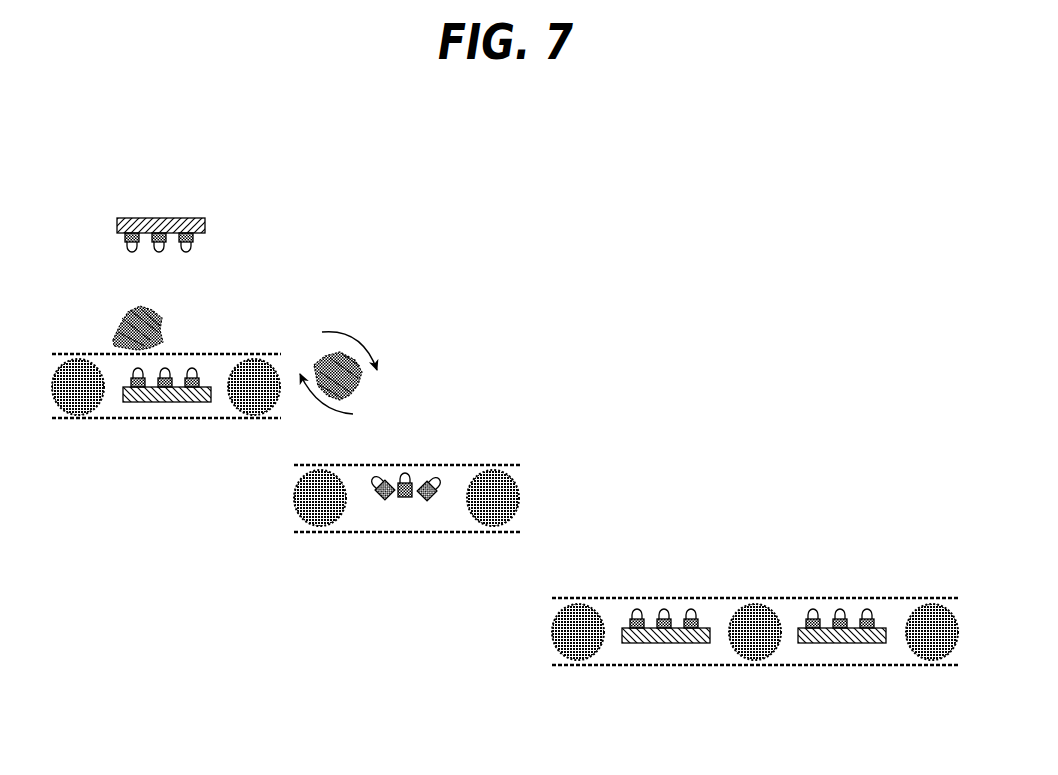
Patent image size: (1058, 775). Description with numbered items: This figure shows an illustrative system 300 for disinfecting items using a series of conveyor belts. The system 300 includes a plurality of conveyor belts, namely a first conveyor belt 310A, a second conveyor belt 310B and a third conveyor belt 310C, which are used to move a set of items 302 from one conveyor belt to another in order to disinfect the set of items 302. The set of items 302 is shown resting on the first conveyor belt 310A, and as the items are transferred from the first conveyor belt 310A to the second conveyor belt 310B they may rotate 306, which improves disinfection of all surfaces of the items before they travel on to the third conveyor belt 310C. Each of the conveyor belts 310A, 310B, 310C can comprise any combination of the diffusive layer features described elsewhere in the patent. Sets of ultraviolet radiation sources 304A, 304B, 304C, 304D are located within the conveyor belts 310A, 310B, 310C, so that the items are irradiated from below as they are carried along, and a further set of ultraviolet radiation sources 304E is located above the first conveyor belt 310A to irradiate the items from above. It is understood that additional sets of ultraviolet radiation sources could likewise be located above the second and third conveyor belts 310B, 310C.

The system 300 is at (185, 152).
The set of items 302 is at (125, 327).
The set of ultraviolet radiation sources 304A is at (130, 402).
The set of ultraviolet radiation sources 304B is at (378, 503).
The set of ultraviolet radiation sources 304C is at (641, 640).
The set of ultraviolet radiation sources 304D is at (803, 640).
The set of ultraviolet radiation sources 304E is at (131, 222).
The rotation 306 is at (366, 331).
The first conveyor belt 310A is at (168, 420).
The second conveyor belt 310B is at (398, 533).
The third conveyor belt 310C is at (822, 665).